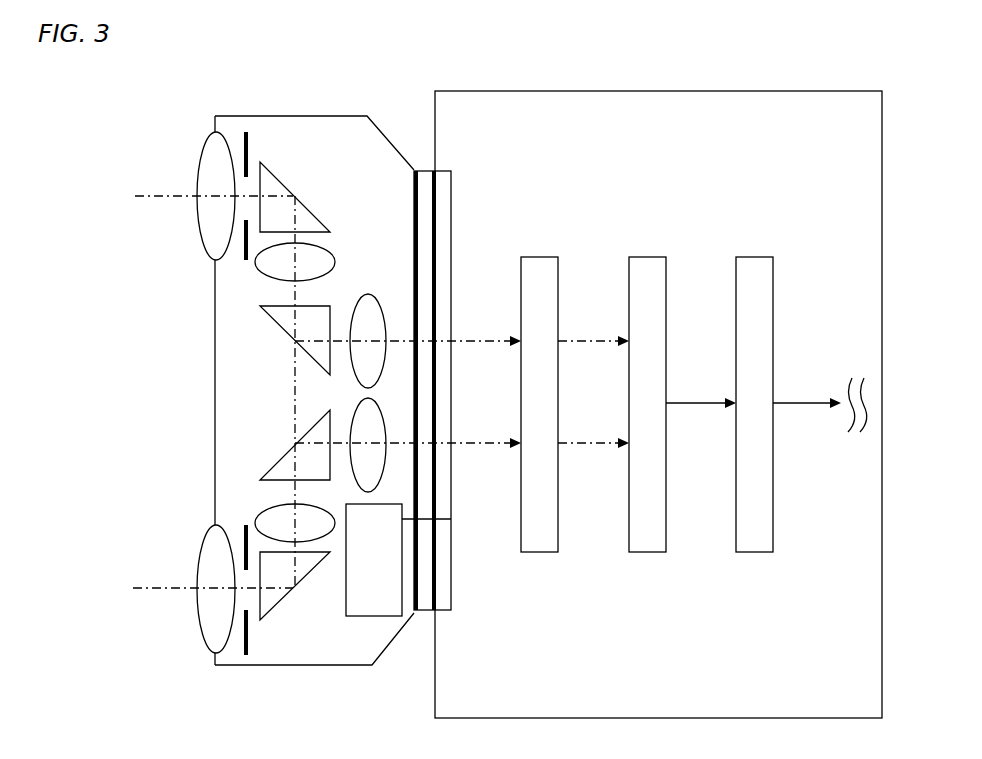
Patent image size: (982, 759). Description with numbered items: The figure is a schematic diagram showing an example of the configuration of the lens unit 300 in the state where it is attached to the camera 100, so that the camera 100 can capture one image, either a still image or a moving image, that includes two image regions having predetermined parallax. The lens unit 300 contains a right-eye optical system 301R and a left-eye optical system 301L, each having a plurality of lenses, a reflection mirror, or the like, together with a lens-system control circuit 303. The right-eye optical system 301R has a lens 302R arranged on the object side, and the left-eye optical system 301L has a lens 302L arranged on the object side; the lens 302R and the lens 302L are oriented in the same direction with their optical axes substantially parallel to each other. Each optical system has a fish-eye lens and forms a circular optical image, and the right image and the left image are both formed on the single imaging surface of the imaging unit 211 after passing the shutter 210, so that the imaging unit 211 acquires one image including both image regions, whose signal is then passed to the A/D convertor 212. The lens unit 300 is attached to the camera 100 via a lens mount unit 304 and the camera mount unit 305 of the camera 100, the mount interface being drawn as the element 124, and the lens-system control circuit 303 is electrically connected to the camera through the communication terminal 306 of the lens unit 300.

The camera 100 is at (708, 91).
The mount 124 is at (443, 558).
The shutter 210 is at (540, 257).
The imaging unit 211 is at (647, 257).
The A/D convertor 212 is at (755, 257).
The lens unit 300 is at (383, 135).
The right-eye optical system 301R is at (121, 131).
The left-eye optical system 301L is at (121, 396).
The lens 302R is at (206, 144).
The lens 302L is at (216, 653).
The lens-system control circuit 303 is at (373, 597).
The lens mount unit 304 is at (423, 209).
The camera mount unit 305 is at (443, 200).
The communication terminal 306 is at (425, 596).